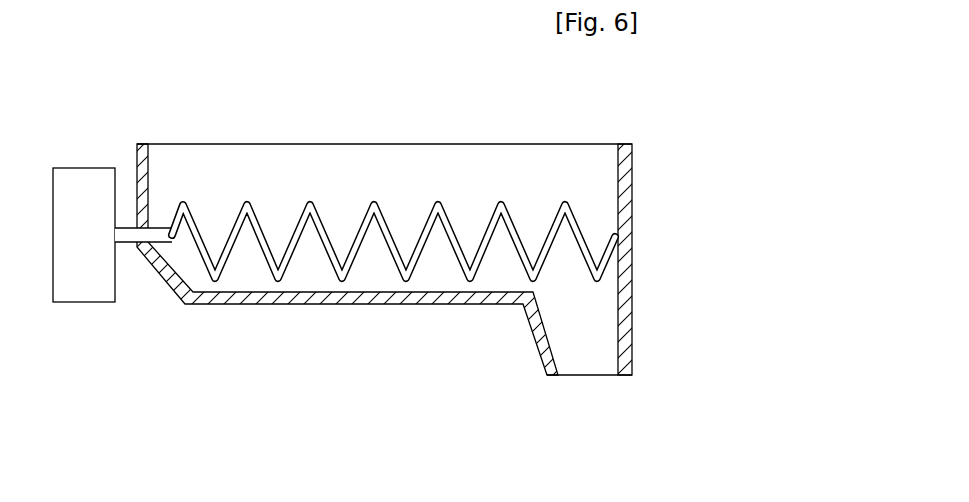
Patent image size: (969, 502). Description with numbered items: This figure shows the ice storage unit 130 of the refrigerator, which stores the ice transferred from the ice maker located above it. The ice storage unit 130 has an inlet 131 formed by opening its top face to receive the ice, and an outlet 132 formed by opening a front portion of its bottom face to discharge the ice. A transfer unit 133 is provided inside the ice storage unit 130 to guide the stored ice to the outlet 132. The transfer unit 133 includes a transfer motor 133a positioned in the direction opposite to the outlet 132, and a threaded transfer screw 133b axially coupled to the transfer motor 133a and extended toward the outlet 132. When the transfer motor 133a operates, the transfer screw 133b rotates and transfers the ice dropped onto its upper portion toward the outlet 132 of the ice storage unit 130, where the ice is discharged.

The ice storage unit 130 is at (484, 251).
The inlet 131 is at (358, 143).
The outlet 132 is at (595, 362).
The transfer unit 133 is at (334, 330).
The transfer motor 133a is at (95, 273).
The transfer screw 133b is at (216, 264).